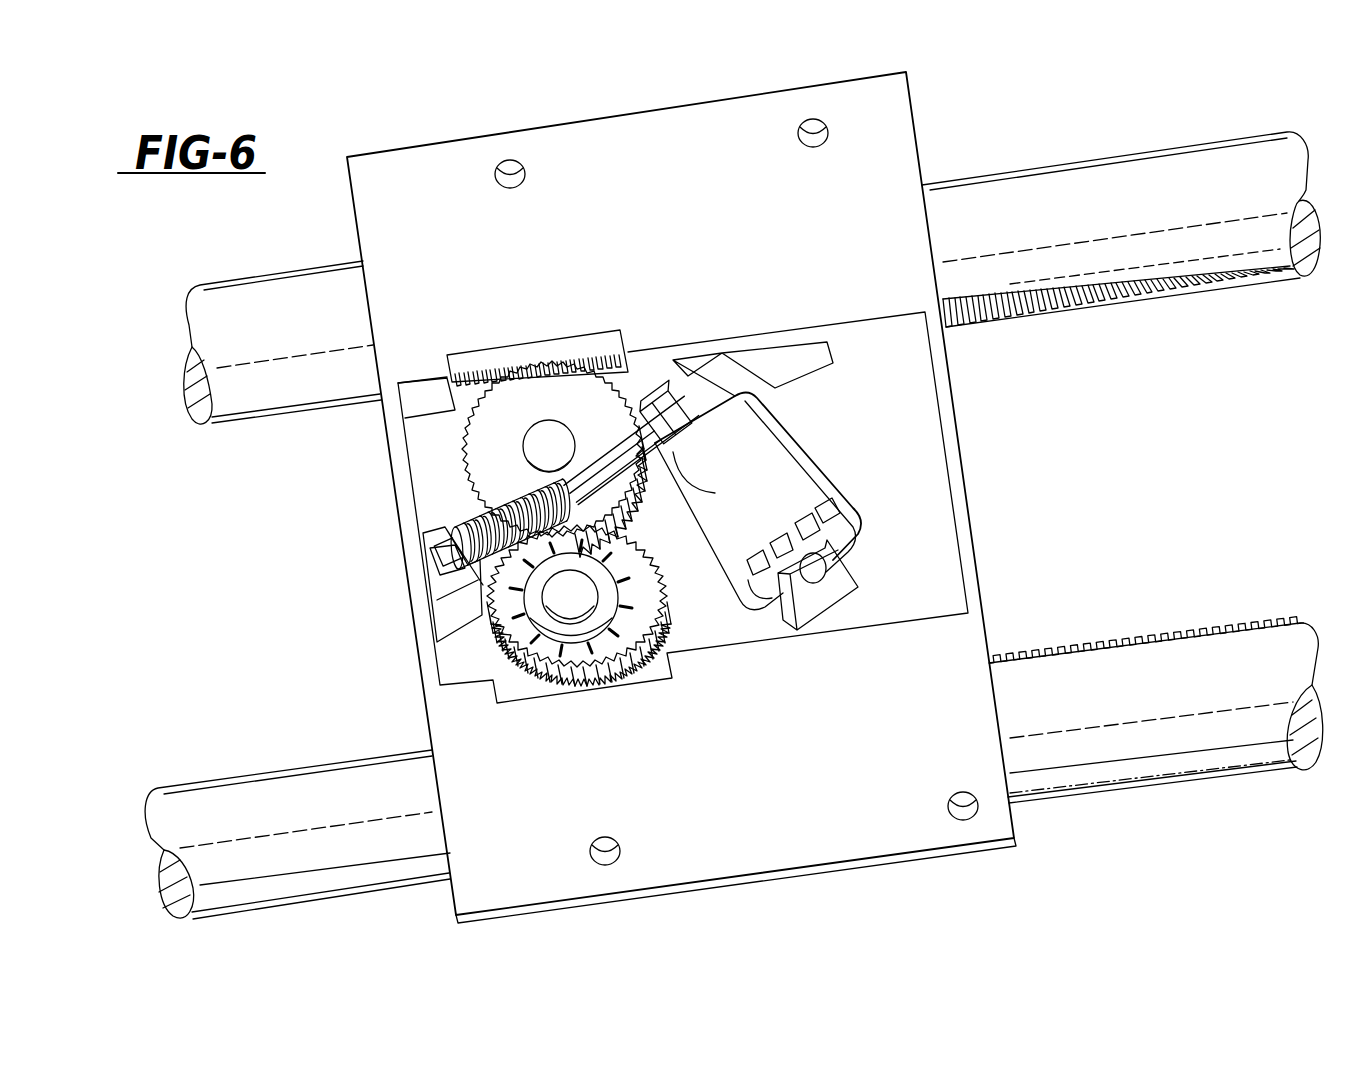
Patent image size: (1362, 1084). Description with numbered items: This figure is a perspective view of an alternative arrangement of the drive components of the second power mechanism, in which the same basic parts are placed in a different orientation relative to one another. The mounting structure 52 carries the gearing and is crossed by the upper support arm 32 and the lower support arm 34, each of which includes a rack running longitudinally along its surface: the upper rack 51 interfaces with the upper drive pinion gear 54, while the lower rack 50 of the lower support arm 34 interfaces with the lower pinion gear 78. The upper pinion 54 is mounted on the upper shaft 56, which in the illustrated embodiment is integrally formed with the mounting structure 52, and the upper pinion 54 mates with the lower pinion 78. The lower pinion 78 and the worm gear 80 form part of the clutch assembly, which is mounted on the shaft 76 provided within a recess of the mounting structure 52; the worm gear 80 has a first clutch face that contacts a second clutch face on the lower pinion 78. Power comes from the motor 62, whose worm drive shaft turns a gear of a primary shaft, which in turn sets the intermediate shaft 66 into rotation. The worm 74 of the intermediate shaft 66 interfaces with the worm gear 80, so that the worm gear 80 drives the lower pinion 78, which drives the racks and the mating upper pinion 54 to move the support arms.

The upper support arm 32 is at (272, 283).
The lower support arm 34 is at (200, 792).
The lower rack 50 is at (1165, 635).
The upper rack 51 is at (563, 352).
The mounting structure 52 is at (958, 512).
The upper drive pinion gear 54 is at (468, 446).
The upper shaft 56 is at (560, 437).
The motor 62 is at (795, 482).
The intermediate shaft 66 is at (680, 465).
The worm 74 is at (460, 513).
The shaft 76 is at (568, 600).
The lower pinion gear 78 is at (660, 615).
The worm gear 80 is at (612, 650).